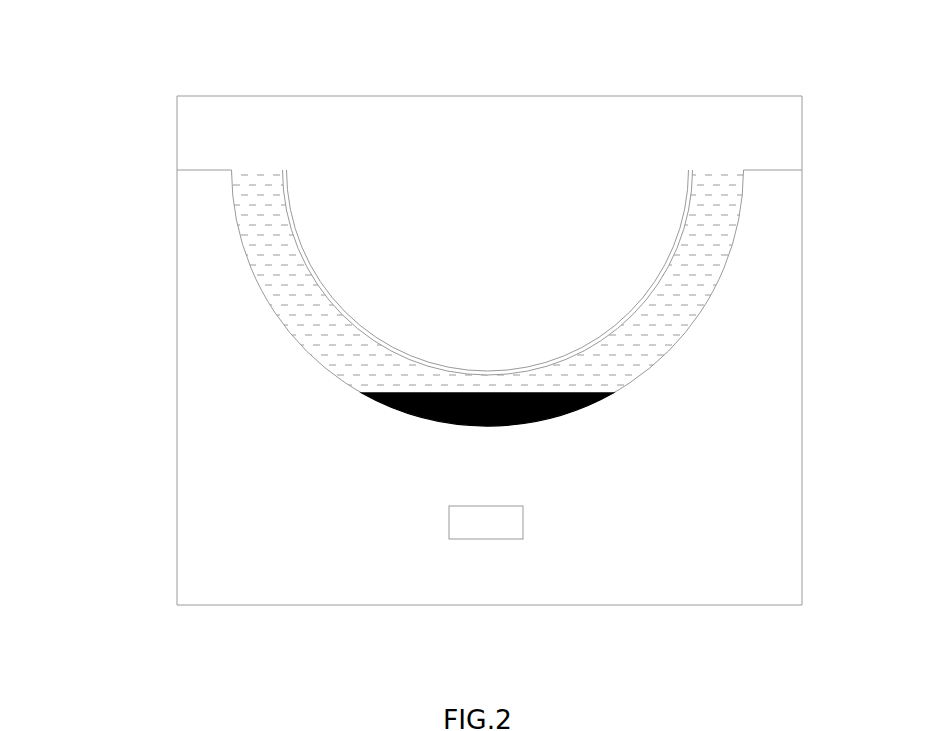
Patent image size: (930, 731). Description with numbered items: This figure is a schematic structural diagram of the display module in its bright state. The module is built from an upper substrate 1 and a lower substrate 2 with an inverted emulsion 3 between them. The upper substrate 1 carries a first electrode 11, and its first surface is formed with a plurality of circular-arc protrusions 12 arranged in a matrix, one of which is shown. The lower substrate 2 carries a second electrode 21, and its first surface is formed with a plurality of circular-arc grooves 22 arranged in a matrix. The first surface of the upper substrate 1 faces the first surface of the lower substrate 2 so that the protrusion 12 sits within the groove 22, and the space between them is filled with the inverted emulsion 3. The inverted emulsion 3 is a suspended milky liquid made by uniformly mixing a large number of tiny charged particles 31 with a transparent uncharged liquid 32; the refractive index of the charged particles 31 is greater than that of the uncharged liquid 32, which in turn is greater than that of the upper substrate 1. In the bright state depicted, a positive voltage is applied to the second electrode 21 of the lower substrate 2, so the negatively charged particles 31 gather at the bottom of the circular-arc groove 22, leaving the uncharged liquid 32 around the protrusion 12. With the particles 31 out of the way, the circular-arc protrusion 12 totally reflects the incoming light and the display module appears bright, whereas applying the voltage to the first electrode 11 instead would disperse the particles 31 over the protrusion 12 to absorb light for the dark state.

The upper substrate 1 is at (463, 96).
The first electrode 11 is at (286, 193).
The protrusion 12 is at (487, 348).
The lower substrate 2 is at (488, 605).
The second electrode 21 is at (456, 540).
The groove 22 is at (620, 392).
The inverted emulsion 3 is at (396, 300).
The charged particles 31 is at (460, 408).
The uncharged liquid 32 is at (298, 315).